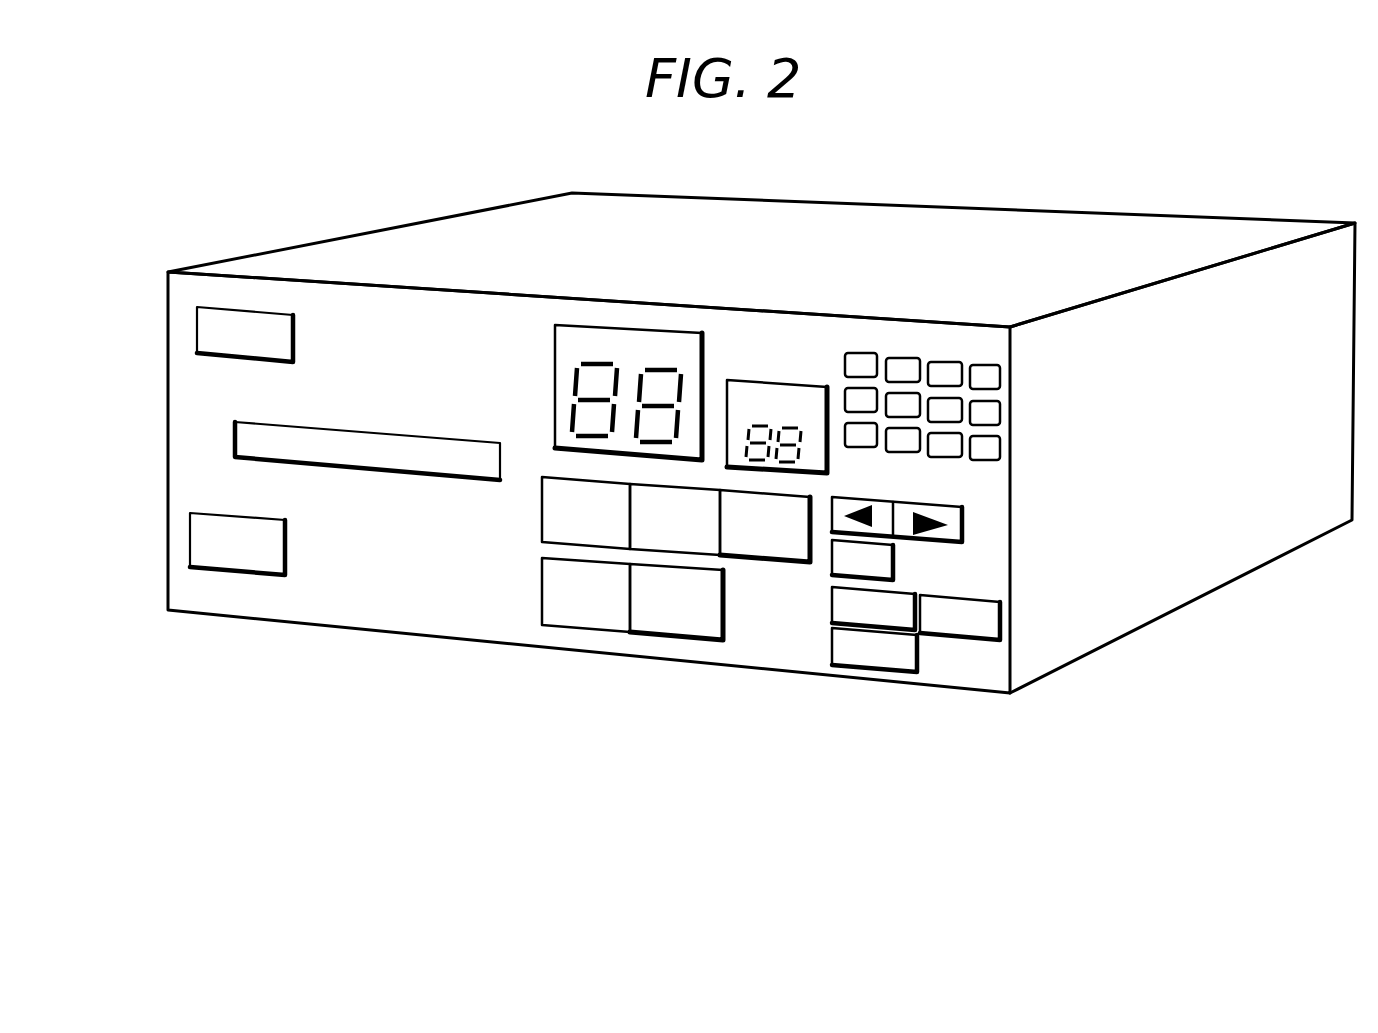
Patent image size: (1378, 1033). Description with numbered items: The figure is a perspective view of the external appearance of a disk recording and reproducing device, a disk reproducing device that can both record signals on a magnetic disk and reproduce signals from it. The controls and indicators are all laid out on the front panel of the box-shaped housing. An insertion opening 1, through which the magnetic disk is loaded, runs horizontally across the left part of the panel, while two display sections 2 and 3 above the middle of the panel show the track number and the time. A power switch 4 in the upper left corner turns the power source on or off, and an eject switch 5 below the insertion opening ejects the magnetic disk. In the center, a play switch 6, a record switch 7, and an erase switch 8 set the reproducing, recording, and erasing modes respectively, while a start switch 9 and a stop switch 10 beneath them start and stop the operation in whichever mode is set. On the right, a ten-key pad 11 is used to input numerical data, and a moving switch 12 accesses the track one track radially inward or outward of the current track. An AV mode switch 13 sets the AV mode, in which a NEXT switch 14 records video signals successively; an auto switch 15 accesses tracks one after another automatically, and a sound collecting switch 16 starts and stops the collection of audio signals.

The insertion opening 1 is at (235, 443).
The display section 2 is at (625, 327).
The display section 3 is at (775, 381).
The power switch 4 is at (197, 332).
The eject switch 5 is at (190, 541).
The play switch 6 is at (543, 532).
The record switch 7 is at (712, 554).
The erase switch 8 is at (778, 564).
The start switch 9 is at (592, 633).
The stop switch 10 is at (683, 638).
The ten-key pad 11 is at (1012, 467).
The moving switch 12 is at (962, 525).
The AV mode switch 13 is at (893, 562).
The NEXT switch 14 is at (832, 604).
The auto switch 15 is at (1000, 618).
The sound collecting switch 16 is at (898, 670).